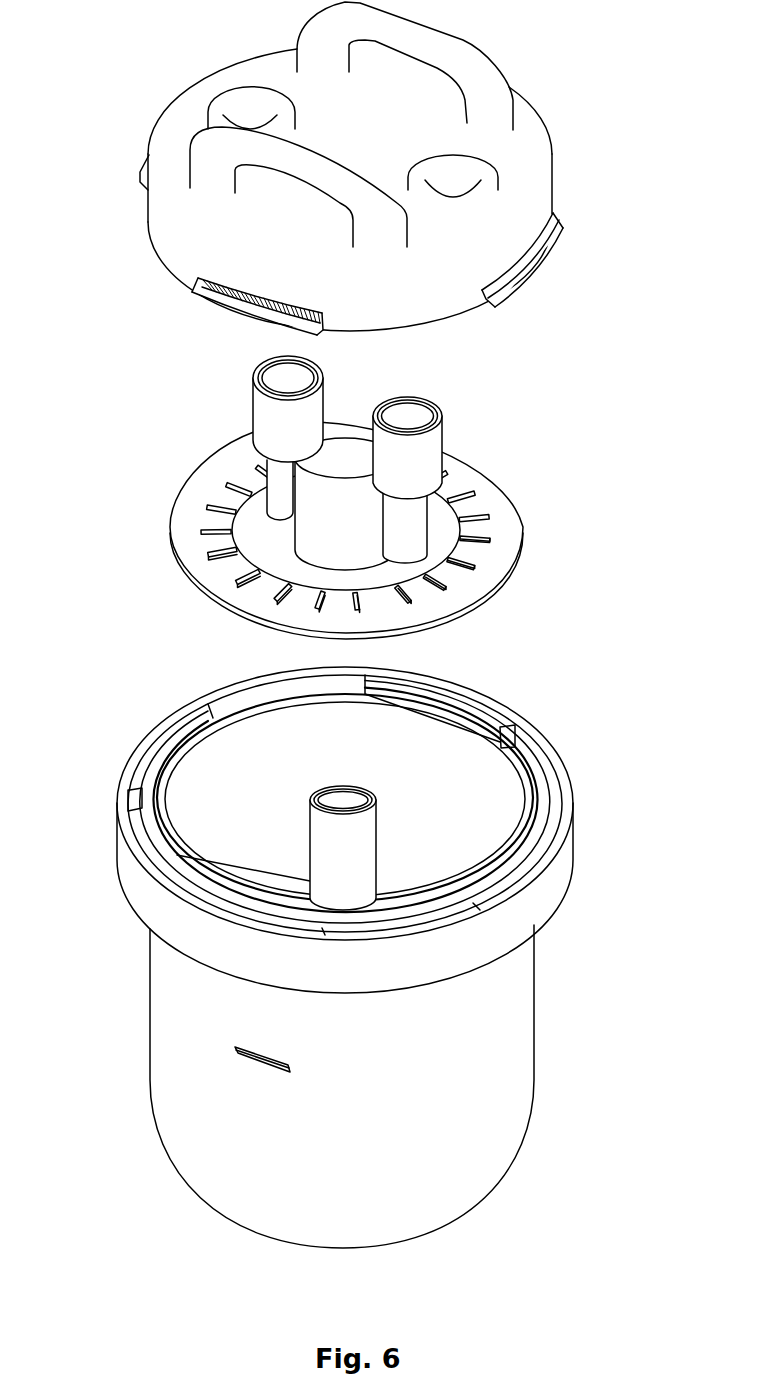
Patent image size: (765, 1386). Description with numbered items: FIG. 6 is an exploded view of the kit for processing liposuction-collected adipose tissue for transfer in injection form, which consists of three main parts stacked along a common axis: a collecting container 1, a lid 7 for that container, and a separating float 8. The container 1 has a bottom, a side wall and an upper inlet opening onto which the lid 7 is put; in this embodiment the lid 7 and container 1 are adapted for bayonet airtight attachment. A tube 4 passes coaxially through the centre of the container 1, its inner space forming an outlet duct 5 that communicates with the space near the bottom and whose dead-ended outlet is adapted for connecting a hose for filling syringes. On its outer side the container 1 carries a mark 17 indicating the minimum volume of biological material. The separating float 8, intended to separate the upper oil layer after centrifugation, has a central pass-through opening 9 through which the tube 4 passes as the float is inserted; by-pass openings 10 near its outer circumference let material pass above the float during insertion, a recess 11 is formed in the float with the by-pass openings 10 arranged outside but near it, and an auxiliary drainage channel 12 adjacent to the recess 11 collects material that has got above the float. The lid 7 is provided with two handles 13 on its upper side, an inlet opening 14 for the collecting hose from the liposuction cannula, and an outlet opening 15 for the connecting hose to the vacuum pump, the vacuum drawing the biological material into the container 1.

The collecting container 1 is at (373, 957).
The tube 4 is at (308, 879).
The outlet duct 5 is at (342, 807).
The lid 7 is at (397, 168).
The separating float 8 is at (379, 493).
The pass-through opening 9 is at (335, 457).
The by-pass opening 10 is at (423, 587).
The recess 11 is at (253, 537).
The auxiliary drainage channel 12 is at (293, 390).
The handles 13 is at (470, 43).
The inlet opening 14 is at (442, 180).
The outlet opening 15 is at (233, 103).
The mark 17 is at (273, 1057).